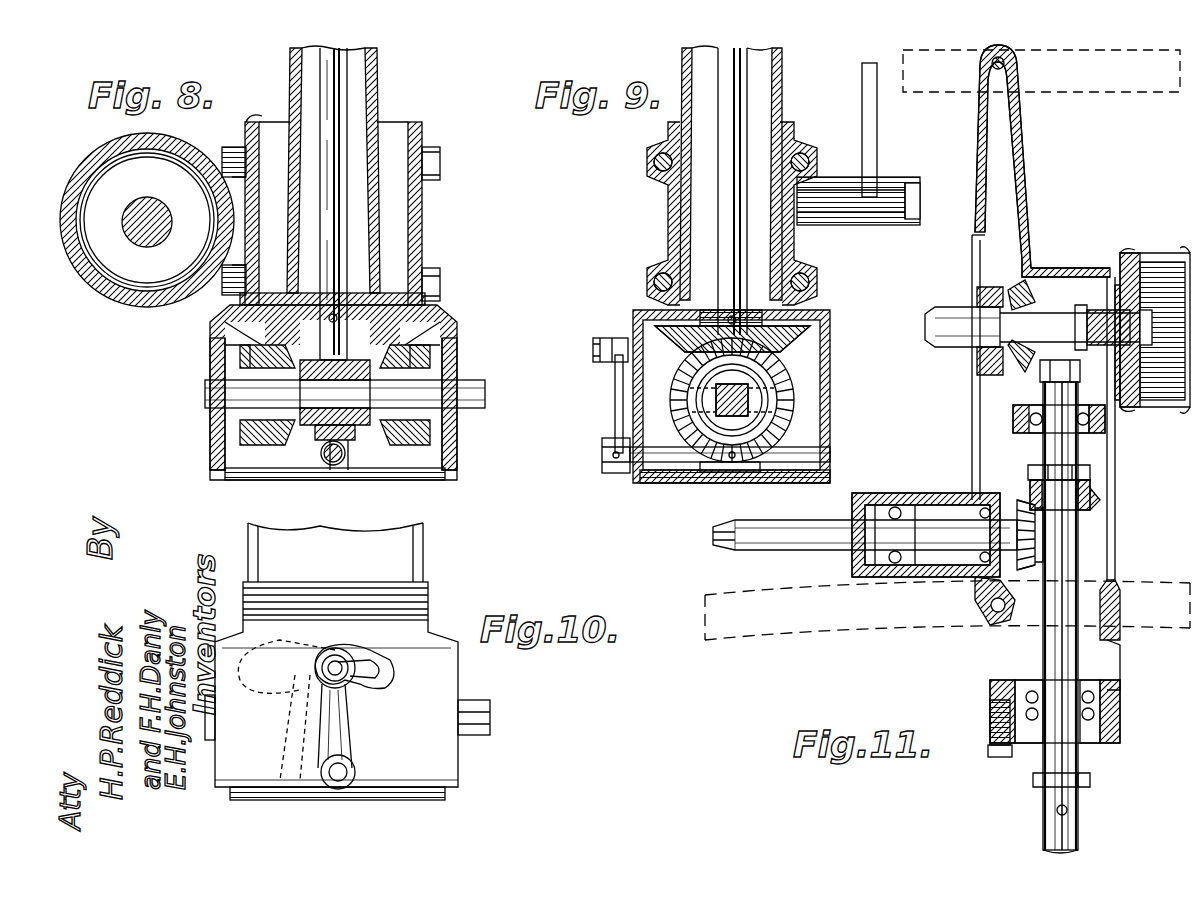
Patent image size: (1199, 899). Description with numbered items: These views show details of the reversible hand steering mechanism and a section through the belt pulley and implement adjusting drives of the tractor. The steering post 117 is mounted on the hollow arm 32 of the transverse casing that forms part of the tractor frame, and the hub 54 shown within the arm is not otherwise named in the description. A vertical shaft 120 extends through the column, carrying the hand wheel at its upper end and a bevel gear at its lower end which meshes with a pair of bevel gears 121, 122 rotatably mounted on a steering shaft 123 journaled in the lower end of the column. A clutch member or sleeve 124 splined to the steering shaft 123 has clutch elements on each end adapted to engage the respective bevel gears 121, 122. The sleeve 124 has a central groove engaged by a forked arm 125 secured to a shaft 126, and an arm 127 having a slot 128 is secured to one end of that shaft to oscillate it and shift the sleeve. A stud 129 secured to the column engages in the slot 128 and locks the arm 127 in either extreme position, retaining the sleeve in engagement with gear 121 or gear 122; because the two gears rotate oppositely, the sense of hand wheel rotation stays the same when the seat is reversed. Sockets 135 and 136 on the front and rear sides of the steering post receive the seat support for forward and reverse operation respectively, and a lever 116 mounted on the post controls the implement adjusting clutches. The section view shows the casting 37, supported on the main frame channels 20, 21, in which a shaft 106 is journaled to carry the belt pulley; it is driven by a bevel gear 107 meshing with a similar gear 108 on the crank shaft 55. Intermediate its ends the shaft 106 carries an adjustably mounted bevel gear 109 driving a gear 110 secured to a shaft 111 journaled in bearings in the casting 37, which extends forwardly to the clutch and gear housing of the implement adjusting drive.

In FIG. 11, the channel 20 is at (1125, 95).
In FIG. 11, the channel 21 is at (870, 630).
In FIG. 8, the hollow arm 32 is at (92, 150).
In FIG. 11, the casting 37 is at (1025, 195).
In FIG. 8, the hub 54 is at (128, 238).
In FIG. 11, the crank shaft 55 is at (948, 305).
In FIG. 11, the shaft 106 is at (1082, 550).
In FIG. 11, the bevel gear 107 is at (1040, 372).
In FIG. 11, the bevel gear 108 is at (1018, 300).
In FIG. 11, the adjustably mounted bevel gear 109 is at (1092, 500).
In FIG. 11, the gear 110 is at (1018, 498).
In FIG. 11, the shaft 111 is at (808, 550).
In FIG. 9, the lever 116 is at (860, 112).
In FIG. 8, the steering post 117 is at (378, 94).
In FIG. 9, the steering post 117 is at (785, 80).
In FIG. 10, the steering post 117 is at (432, 556).
In FIG. 8, the vertical shaft 120 is at (342, 112).
In FIG. 9, the vertical shaft 120 is at (722, 178).
In FIG. 8, the bevel gear 121 is at (240, 352).
In FIG. 9, the bevel gear 121 is at (795, 412).
In FIG. 8, the bevel gear 122 is at (430, 438).
In FIG. 8, the steering shaft 123 is at (468, 383).
In FIG. 9, the steering shaft 123 is at (764, 396).
In FIG. 10, the steering shaft 123 is at (492, 712).
In FIG. 8, the clutch member or sleeve 124 is at (372, 425).
In FIG. 9, the clutch member or sleeve 124 is at (795, 366).
In FIG. 8, the forked arm 125 is at (352, 440).
In FIG. 9, the forked arm 125 is at (705, 460).
In FIG. 8, the shaft 126 is at (325, 463).
In FIG. 9, the shaft 126 is at (640, 478).
In FIG. 10, the shaft 126 is at (342, 782).
In FIG. 9, the arm 127 is at (615, 402).
In FIG. 10, the arm 127 is at (355, 748).
In FIG. 10, the slot 128 is at (392, 676).
In FIG. 9, the stud 129 is at (598, 348).
In FIG. 10, the stud 129 is at (345, 660).
In FIG. 8, the socket 135 is at (420, 122).
In FIG. 8, the socket 136 is at (250, 118).